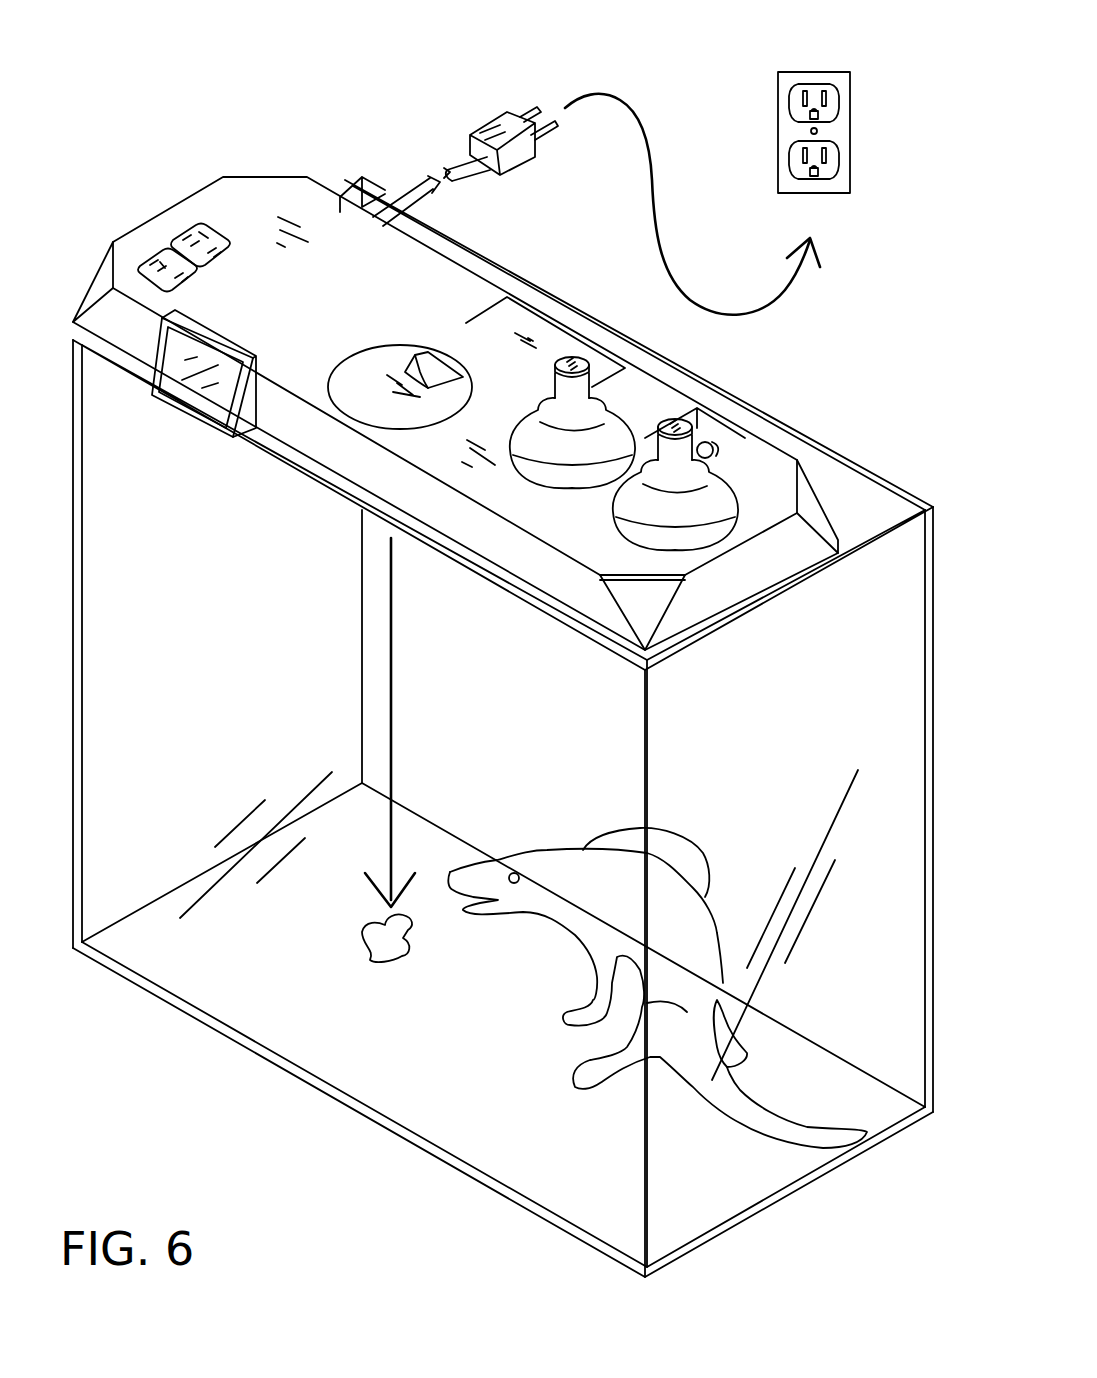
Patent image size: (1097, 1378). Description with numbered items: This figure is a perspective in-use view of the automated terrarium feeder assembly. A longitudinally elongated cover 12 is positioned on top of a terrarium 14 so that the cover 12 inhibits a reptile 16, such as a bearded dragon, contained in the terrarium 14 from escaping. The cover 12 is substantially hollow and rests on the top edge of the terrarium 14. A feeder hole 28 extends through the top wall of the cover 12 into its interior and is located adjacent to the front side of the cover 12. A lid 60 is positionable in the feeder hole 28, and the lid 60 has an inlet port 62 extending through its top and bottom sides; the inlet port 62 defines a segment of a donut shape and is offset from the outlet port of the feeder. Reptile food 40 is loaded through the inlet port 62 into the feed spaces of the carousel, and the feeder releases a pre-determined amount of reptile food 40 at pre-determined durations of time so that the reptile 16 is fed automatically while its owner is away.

The cover 12 is at (225, 177).
The terrarium 14 is at (930, 1032).
The reptile 16 is at (697, 913).
The feeder hole 28 is at (113, 362).
The reptile food 40 is at (390, 963).
The lid 60 is at (365, 362).
The inlet port 62 is at (424, 348).